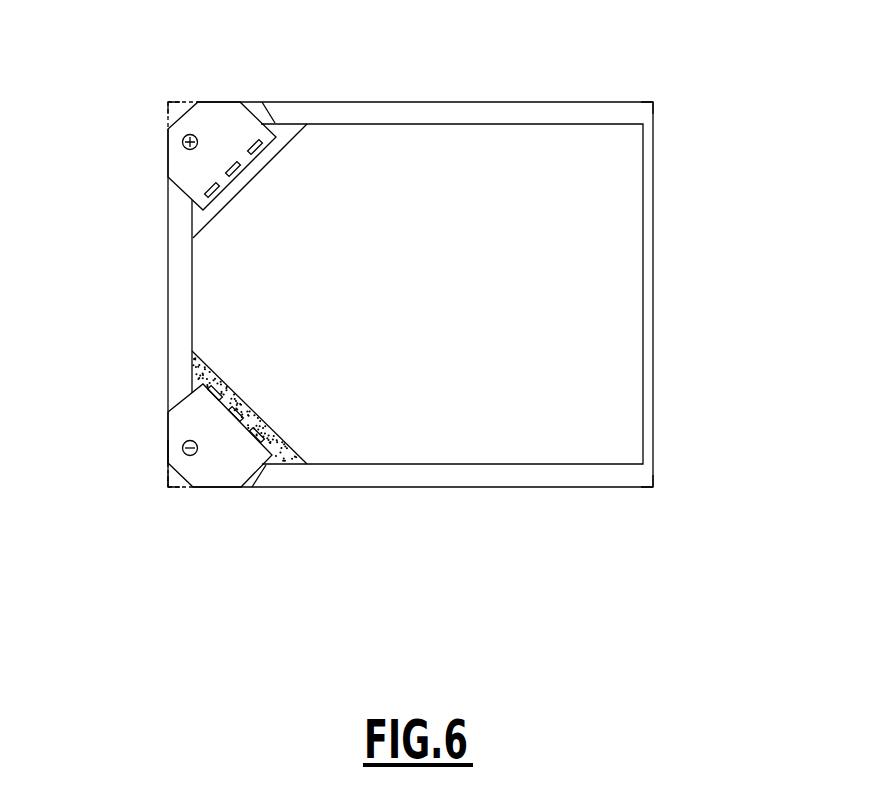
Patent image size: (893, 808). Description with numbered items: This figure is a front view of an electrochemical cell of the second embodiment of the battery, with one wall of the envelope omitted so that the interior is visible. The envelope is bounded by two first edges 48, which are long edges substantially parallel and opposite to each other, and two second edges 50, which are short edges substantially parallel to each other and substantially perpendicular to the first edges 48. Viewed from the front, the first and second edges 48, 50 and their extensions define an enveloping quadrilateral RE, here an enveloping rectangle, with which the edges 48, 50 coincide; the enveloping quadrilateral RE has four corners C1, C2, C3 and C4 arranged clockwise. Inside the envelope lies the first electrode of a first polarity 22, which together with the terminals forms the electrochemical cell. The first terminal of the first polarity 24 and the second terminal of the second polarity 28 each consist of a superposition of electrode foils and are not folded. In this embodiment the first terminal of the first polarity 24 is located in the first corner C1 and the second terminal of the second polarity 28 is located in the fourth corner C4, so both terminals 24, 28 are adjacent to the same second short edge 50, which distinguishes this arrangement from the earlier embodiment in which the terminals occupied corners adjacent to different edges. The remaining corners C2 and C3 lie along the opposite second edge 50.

The first electrode of a first polarity 22 is at (502, 422).
The first terminal of the first polarity 24 is at (216, 124).
The second terminal of the second polarity 28 is at (218, 458).
The first edges 48 is at (458, 101).
The second edges 50 is at (168, 322).
The first corner C1 is at (168, 101).
The second corner C2 is at (654, 101).
The third corner C3 is at (655, 488).
The fourth corner C4 is at (168, 487).
The enveloping quadrilateral RE is at (168, 468).